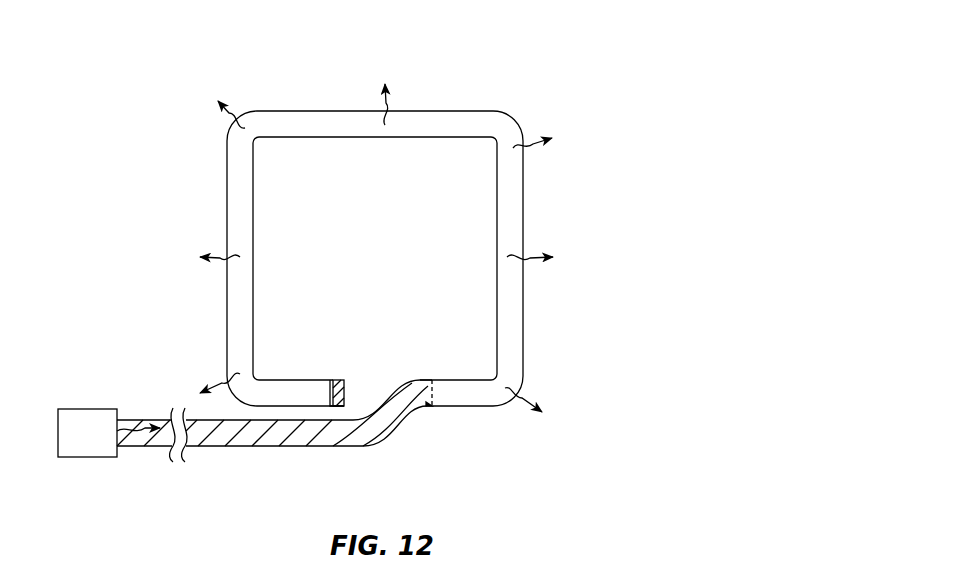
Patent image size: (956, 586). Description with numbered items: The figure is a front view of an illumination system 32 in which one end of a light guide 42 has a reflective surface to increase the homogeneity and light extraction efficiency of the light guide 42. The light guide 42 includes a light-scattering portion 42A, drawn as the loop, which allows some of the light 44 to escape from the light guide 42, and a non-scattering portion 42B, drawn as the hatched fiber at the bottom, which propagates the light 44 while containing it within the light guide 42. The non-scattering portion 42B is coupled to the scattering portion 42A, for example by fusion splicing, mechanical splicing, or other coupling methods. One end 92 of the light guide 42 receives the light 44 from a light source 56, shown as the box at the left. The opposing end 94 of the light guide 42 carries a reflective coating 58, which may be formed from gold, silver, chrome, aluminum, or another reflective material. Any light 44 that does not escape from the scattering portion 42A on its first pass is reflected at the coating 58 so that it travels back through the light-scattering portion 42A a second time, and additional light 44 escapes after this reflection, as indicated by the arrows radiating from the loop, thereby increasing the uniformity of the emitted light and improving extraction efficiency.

The illumination system 32 is at (547, 68).
The light guide 42 is at (513, 323).
The light-scattering portion 42A is at (467, 398).
The non-scattering portion 42B is at (300, 442).
The light 44 is at (390, 97).
The light source 56 is at (95, 445).
The reflective coating 58 is at (348, 390).
The end 92 is at (116, 428).
The end 94 is at (330, 390).